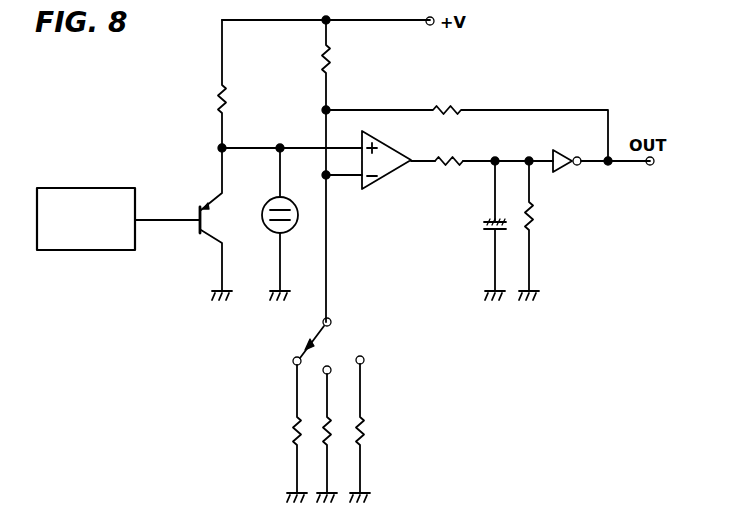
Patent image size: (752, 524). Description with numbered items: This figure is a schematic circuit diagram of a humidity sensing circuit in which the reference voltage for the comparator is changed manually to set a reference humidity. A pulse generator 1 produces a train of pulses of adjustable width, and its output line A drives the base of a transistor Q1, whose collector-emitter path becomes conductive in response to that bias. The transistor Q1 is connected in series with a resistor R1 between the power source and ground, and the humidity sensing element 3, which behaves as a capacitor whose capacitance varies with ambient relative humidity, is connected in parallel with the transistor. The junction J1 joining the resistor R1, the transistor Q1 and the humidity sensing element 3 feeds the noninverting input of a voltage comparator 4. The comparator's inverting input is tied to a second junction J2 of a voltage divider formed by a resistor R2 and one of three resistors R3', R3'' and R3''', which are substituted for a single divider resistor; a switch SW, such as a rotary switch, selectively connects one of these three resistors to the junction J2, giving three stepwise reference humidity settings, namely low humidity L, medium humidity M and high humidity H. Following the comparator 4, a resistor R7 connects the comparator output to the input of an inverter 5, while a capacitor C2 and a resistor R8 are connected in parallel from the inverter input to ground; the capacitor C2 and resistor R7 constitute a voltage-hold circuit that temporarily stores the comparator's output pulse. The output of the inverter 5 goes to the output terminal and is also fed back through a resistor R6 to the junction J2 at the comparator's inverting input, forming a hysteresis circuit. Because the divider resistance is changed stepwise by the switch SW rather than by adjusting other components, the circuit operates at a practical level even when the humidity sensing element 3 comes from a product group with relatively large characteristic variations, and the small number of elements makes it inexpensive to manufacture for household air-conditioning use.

The pulse generator 1 is at (90, 188).
The humidity sensing element 3 is at (267, 201).
The voltage comparator 4 is at (386, 151).
The inverter 5 is at (562, 152).
The pulse generator output line A is at (166, 218).
The junction J1 is at (220, 148).
The second junction J2 is at (328, 177).
The transistor Q1 is at (226, 224).
The resistor R1 is at (226, 100).
The resistor R2 is at (331, 65).
The resistor R6 is at (447, 106).
The resistor R7 is at (451, 158).
The resistor R8 is at (534, 219).
The capacitor C2 is at (484, 226).
The switch SW is at (358, 332).
The low humidity L is at (292, 361).
The medium humidity M is at (331, 370).
The high humidity H is at (364, 361).
The resistor R3' is at (273, 433).
The resistor R3'' is at (362, 438).
The resistor R3''' is at (385, 433).